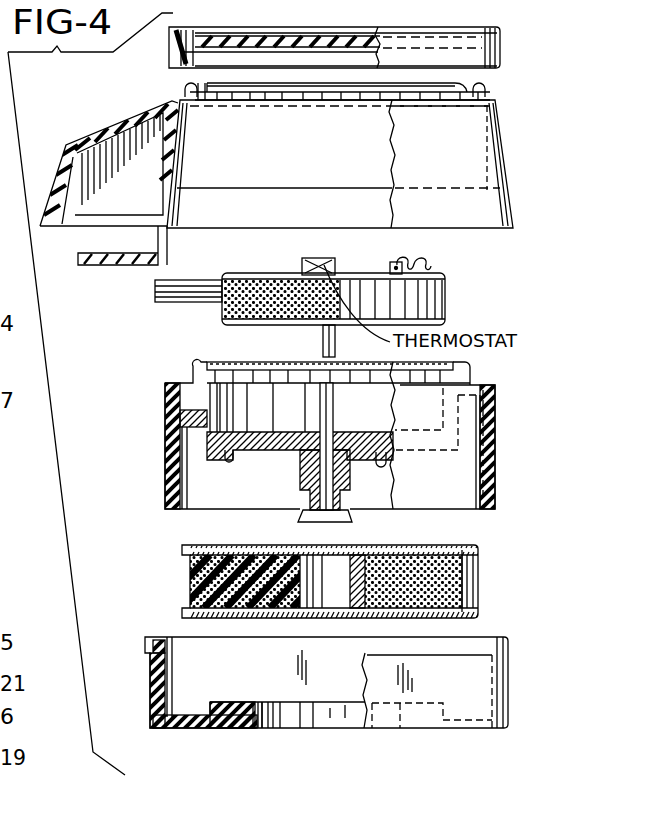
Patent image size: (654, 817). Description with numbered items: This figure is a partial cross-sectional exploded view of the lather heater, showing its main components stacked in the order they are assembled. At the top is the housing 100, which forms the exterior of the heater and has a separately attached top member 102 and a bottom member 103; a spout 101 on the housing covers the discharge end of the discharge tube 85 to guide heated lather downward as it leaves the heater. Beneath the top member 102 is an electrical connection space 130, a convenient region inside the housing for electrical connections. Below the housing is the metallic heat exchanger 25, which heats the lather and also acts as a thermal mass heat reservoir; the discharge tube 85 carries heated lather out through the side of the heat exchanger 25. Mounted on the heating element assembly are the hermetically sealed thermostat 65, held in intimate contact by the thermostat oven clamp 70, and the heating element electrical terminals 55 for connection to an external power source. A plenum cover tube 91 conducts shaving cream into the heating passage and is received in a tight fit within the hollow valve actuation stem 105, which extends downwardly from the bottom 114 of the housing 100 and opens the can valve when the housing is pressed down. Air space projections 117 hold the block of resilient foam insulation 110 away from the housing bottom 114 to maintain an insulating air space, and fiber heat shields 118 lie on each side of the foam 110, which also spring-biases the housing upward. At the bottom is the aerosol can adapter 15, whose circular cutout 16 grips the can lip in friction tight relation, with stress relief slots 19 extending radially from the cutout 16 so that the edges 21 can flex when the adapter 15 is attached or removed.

The housing 100 is at (514, 150).
The spout 101 is at (107, 134).
The top member 102 is at (168, 54).
The electrical connection space 130 is at (340, 158).
The heat exchanger 25 is at (228, 310).
The discharge tube 85 is at (161, 287).
The thermostat oven clamp 70 is at (303, 260).
The thermostat 65 is at (322, 263).
The heating element electrical terminals 55 is at (405, 269).
The plenum cover tube 91 is at (336, 337).
The bottom member 103 is at (170, 426).
The bottom of housing 114 is at (216, 454).
The air space projections 117 is at (229, 461).
The valve actuation stem 105 is at (308, 488).
The resilient foam insulation 110 is at (188, 572).
The fiber heat shields 118 is at (478, 550).
The aerosol can adapter 15 is at (158, 683).
The circular cutout 16 is at (258, 718).
The stress relief slots 19 is at (291, 717).
The edges of cutout 21 is at (344, 718).